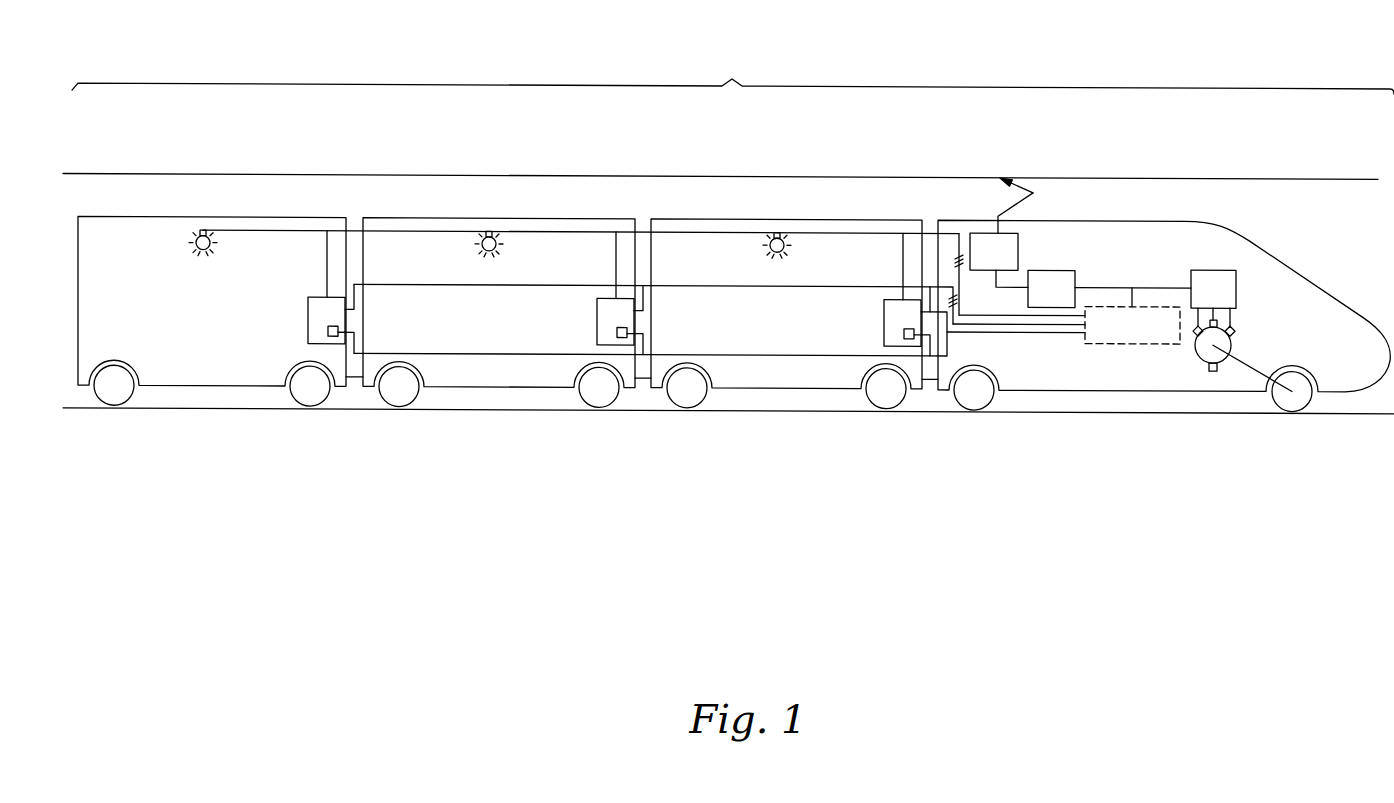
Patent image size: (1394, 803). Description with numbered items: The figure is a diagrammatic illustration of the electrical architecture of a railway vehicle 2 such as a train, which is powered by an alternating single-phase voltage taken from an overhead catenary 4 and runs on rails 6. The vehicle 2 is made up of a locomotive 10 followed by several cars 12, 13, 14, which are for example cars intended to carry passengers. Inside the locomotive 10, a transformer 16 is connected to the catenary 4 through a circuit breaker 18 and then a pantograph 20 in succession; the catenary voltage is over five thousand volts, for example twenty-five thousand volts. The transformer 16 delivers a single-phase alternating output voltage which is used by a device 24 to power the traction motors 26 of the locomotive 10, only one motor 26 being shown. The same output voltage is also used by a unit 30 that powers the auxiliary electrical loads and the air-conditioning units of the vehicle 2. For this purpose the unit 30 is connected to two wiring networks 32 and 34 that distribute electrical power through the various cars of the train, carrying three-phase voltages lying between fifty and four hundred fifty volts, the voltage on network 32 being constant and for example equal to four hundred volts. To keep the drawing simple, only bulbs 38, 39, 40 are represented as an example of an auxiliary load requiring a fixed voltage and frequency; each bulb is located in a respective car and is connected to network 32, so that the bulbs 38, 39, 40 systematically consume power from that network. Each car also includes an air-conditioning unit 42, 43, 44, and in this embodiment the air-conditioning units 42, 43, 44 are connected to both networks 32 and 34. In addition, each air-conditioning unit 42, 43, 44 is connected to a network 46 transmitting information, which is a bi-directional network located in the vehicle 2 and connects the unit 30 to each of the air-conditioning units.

The railway vehicle 2 is at (733, 71).
The catenary 4 is at (1157, 174).
The rails 6 is at (1107, 408).
The locomotive 10 is at (1306, 252).
The car 12 is at (729, 205).
The car 13 is at (439, 203).
The car 14 is at (150, 202).
The transformer 16 is at (1035, 288).
The circuit breaker 18 is at (994, 245).
The pantograph 20 is at (1033, 188).
The device 24 is at (1155, 289).
The traction motor 26 is at (1252, 337).
The unit 30 is at (1132, 316).
The wiring network 32 is at (960, 271).
The wiring network 34 is at (1027, 328).
The bulb 38 is at (783, 244).
The bulb 39 is at (495, 245).
The bulb 40 is at (208, 246).
The air-conditioning unit 42 is at (873, 313).
The air-conditioning unit 43 is at (587, 314).
The air-conditioning unit 44 is at (298, 327).
The network 46 is at (948, 338).